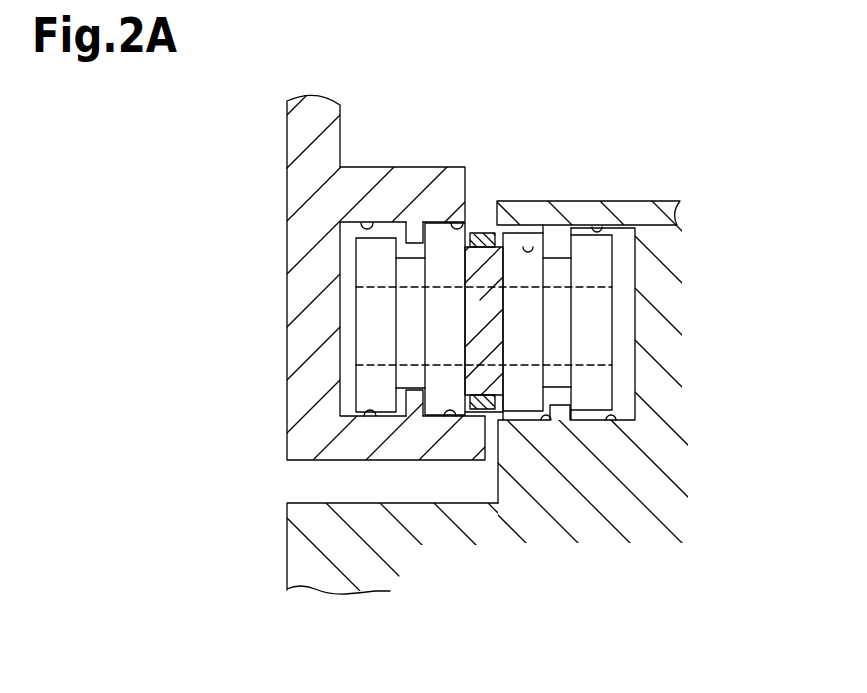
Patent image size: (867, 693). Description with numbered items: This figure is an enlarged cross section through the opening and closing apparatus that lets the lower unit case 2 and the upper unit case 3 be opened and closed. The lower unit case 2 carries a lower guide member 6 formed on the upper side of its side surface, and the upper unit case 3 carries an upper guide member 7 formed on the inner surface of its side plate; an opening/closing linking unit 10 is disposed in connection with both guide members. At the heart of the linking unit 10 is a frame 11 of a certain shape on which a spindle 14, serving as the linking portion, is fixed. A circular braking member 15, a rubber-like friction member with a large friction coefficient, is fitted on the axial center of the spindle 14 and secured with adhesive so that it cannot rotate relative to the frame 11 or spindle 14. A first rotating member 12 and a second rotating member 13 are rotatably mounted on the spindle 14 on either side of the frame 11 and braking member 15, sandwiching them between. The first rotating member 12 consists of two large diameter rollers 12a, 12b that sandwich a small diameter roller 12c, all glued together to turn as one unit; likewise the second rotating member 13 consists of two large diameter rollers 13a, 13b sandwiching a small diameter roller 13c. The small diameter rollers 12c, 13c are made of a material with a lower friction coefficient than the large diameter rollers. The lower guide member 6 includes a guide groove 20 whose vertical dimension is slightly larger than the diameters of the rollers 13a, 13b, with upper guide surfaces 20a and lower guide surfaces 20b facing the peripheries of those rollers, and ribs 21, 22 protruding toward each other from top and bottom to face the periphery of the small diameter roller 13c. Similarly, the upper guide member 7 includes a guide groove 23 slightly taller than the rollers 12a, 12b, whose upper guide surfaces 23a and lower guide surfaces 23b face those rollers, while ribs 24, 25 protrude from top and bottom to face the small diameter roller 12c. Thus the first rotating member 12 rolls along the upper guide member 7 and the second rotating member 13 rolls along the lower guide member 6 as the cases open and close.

The lower unit case 2 is at (282, 541).
The upper unit case 3 is at (345, 106).
The lower guide member 6 is at (651, 193).
The upper guide member 7 is at (396, 158).
The opening/closing linking unit 10 is at (479, 231).
The frame 11 is at (488, 208).
The first rotating member 12 is at (318, 332).
The large diameter roller 12a is at (380, 337).
The large diameter roller 12b is at (407, 381).
The small diameter roller 12c is at (410, 353).
The second rotating member 13 is at (658, 325).
The large diameter roller 13a is at (598, 303).
The large diameter roller 13b is at (525, 377).
The small diameter roller 13c is at (558, 342).
The spindle 14 is at (368, 310).
The braking member 15 is at (506, 390).
The guide groove 20 is at (632, 268).
The upper guide surfaces 20a is at (598, 224).
The lower guide surfaces 20b is at (612, 422).
The rib 21 is at (562, 242).
The rib 22 is at (562, 416).
The guide groove 23 is at (334, 292).
The upper guide surfaces 23a is at (467, 224).
The lower guide surfaces 23b is at (458, 420).
The rib 24 is at (418, 240).
The rib 25 is at (416, 409).